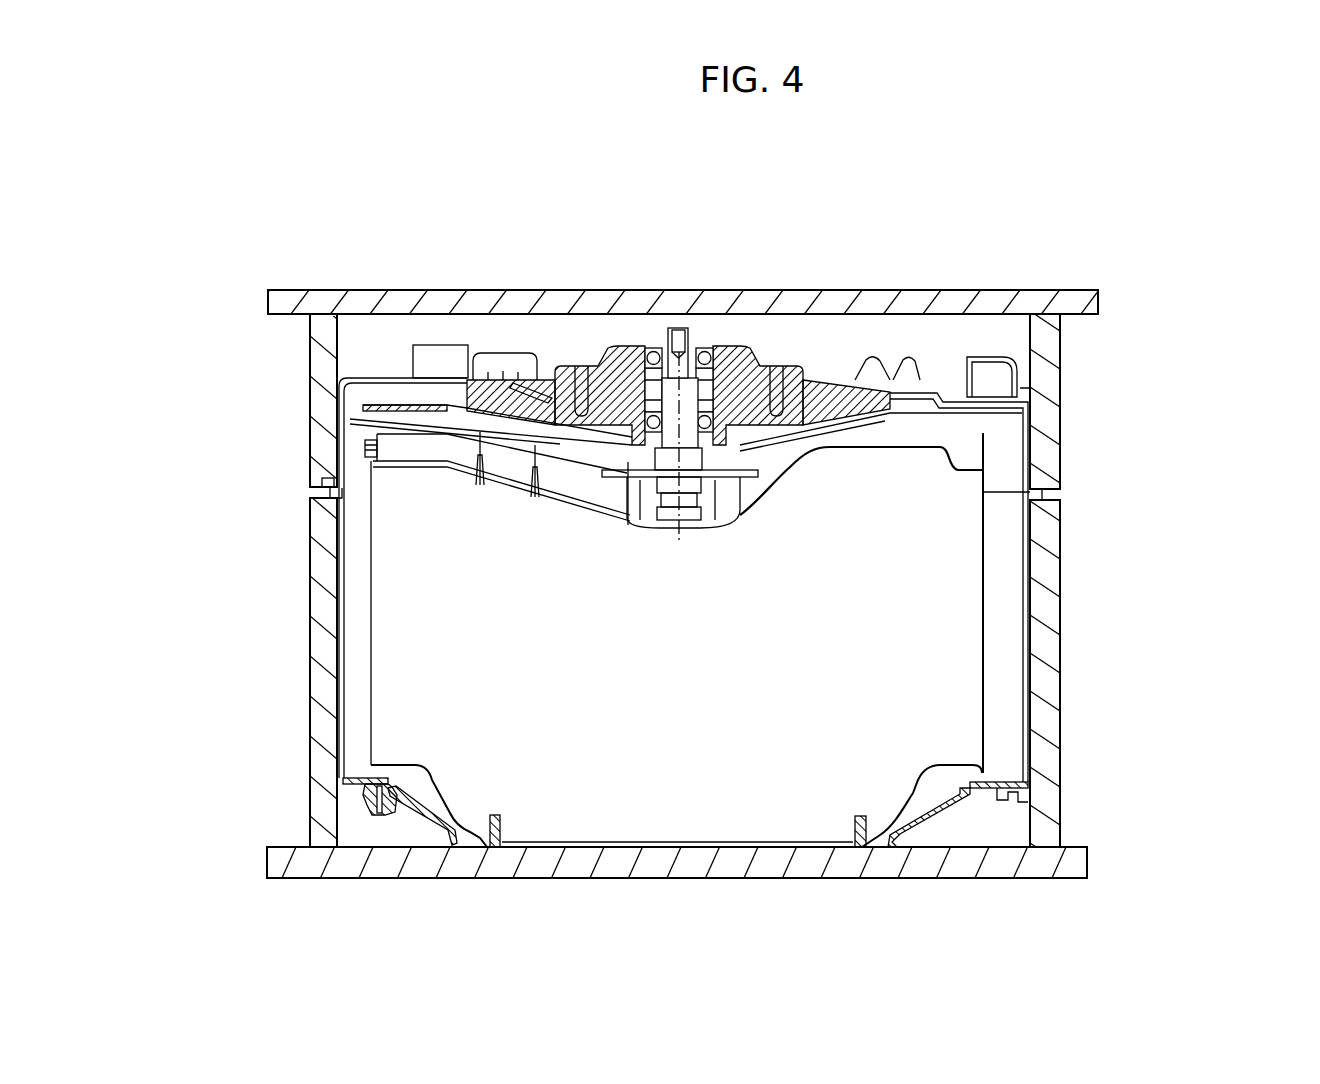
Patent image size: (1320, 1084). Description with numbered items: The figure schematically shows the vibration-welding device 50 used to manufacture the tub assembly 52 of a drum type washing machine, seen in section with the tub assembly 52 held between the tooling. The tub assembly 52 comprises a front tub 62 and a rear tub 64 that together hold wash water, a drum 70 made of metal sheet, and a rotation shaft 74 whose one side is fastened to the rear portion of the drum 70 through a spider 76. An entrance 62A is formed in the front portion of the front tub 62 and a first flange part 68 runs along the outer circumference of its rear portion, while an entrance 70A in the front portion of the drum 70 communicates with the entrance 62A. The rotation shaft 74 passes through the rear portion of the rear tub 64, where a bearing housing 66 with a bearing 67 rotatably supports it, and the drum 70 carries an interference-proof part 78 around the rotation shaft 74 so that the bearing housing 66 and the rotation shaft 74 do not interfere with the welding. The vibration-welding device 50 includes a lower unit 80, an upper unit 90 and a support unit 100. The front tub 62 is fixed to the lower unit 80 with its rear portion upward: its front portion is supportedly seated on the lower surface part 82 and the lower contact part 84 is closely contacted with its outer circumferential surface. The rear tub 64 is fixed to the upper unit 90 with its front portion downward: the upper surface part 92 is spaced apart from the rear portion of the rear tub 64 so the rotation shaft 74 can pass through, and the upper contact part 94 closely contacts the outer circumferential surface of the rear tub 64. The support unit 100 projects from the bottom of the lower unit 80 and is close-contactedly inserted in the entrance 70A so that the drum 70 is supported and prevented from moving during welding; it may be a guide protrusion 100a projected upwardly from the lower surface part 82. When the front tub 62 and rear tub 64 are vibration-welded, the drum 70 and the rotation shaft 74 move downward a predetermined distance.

The vibration-welding device 50 is at (285, 279).
The tub assembly 52 is at (555, 350).
The front tub 62 is at (340, 633).
The entrance 62A is at (478, 848).
The rear tub 64 is at (395, 383).
The bearing housing 66 is at (742, 355).
The bearing 67 is at (325, 480).
The first flange part 68 is at (327, 500).
The drum 70 is at (340, 738).
The entrance 70A is at (585, 848).
The rotation shaft 74 is at (667, 328).
The spider 76 is at (378, 433).
The interference-proof part 78 is at (642, 342).
The lower unit 80 is at (1233, 790).
The lower surface part 82 is at (993, 867).
The lower contact part 84 is at (1057, 768).
The upper unit 90 is at (1198, 380).
The upper surface part 92 is at (992, 302).
The upper contact part 94 is at (1048, 408).
The support unit 100 is at (505, 812).
The guide protrusion 100a is at (856, 815).